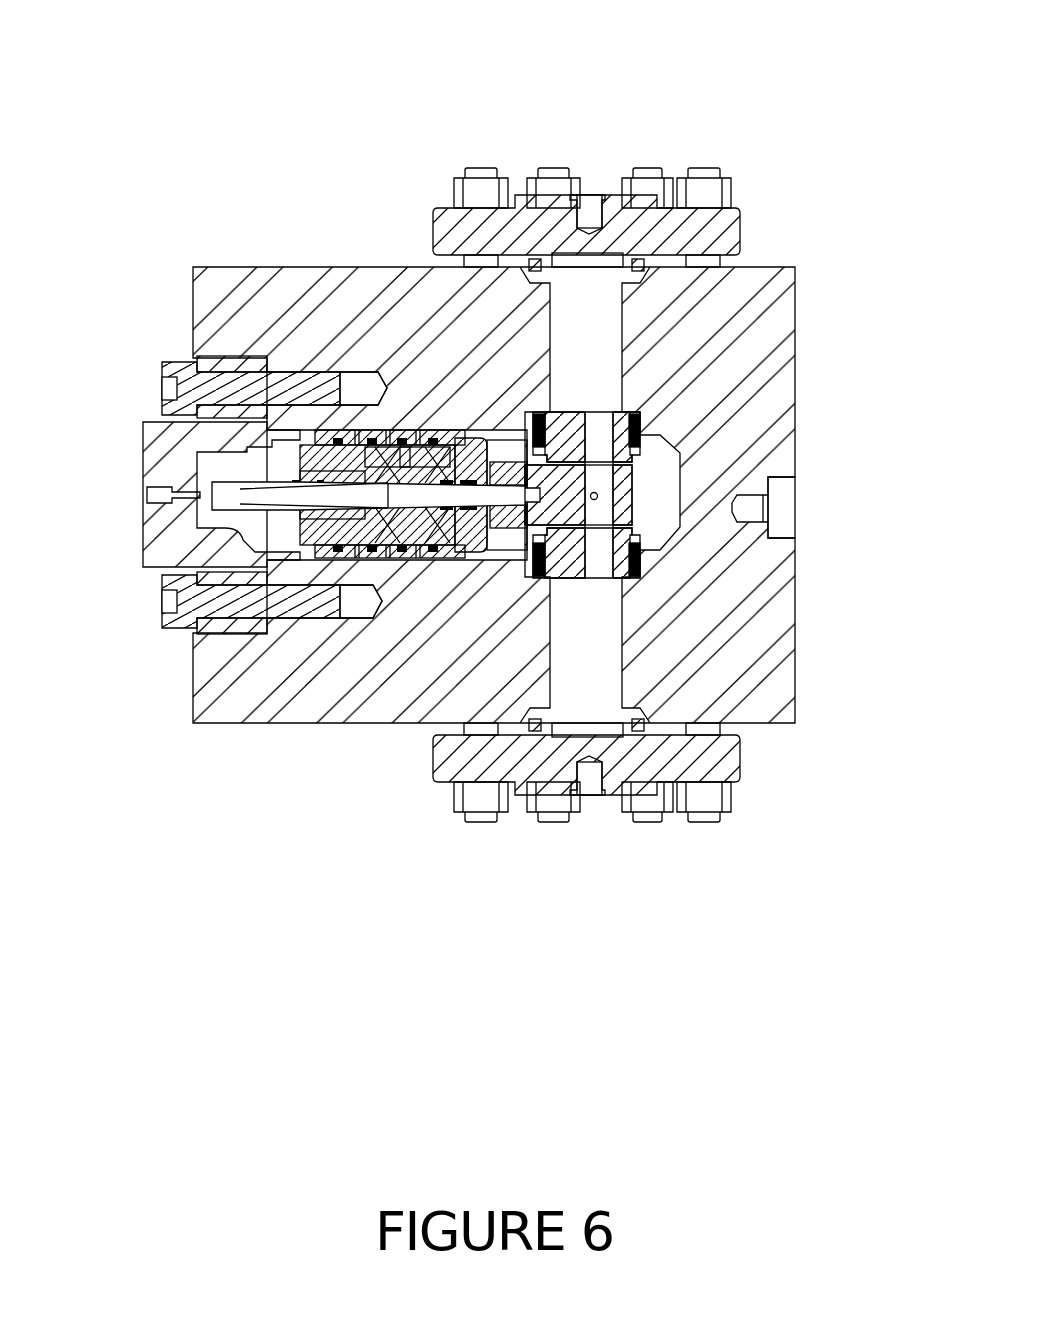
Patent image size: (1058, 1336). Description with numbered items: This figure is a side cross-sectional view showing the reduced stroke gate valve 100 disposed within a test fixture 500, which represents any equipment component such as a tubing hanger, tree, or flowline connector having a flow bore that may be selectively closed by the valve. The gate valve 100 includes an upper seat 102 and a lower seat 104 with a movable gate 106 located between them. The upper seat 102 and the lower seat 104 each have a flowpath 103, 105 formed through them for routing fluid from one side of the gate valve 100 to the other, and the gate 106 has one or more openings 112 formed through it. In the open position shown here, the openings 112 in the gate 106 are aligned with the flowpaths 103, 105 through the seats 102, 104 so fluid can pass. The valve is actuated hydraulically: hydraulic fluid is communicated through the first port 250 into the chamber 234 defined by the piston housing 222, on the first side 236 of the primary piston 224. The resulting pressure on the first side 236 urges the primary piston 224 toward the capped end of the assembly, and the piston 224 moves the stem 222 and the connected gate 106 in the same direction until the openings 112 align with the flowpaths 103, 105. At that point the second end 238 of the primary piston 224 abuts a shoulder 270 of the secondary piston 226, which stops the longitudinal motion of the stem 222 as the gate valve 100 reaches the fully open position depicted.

The test fixture 500 is at (475, 446).
The gate valve 100 is at (465, 497).
The upper seat 102 is at (605, 440).
The flowpath 103 is at (636, 446).
The lower seat 104 is at (612, 540).
The flowpath 105 is at (636, 563).
The gate 106 is at (620, 477).
The opening 112 is at (605, 500).
The piston housing 222 is at (230, 488).
The primary piston 224 is at (372, 450).
The secondary piston 226 is at (243, 542).
The chamber 234 is at (392, 515).
The first side 236 is at (404, 445).
The second end 238 is at (370, 475).
The first port 250 is at (356, 497).
The shoulder 270 is at (390, 535).